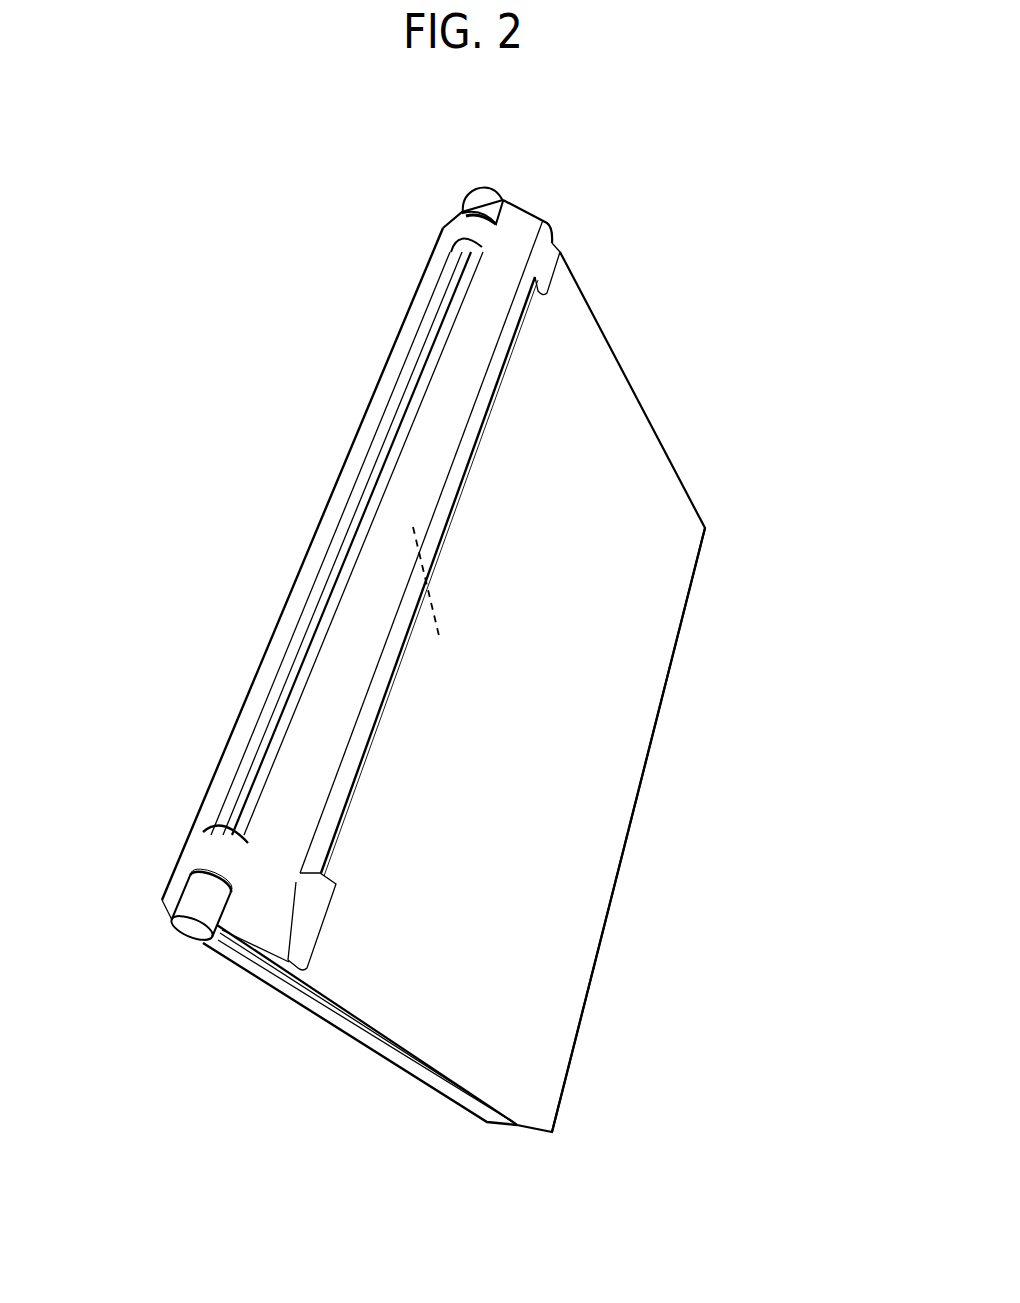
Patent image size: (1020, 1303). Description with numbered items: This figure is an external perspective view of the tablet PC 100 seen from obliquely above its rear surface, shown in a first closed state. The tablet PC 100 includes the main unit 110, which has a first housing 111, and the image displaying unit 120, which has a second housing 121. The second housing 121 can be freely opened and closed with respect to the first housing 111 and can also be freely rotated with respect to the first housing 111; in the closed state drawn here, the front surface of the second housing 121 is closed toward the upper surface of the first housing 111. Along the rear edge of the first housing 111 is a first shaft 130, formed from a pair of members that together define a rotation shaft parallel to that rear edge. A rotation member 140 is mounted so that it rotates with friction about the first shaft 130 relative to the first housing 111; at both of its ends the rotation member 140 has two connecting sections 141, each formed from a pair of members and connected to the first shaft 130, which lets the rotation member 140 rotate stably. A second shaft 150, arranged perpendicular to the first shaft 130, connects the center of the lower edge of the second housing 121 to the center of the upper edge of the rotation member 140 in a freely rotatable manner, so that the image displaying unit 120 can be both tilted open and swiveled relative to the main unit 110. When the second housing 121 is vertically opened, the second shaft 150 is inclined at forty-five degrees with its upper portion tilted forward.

The tablet PC 100 is at (712, 932).
The main unit 110 is at (399, 1066).
The first housing 111 is at (372, 1043).
The image displaying unit 120 is at (550, 998).
The second housing 121 is at (542, 1088).
The first shaft 130 is at (487, 205).
The rotation member 140 is at (335, 672).
The connecting sections 141 is at (468, 224).
The second shaft 150 is at (410, 540).